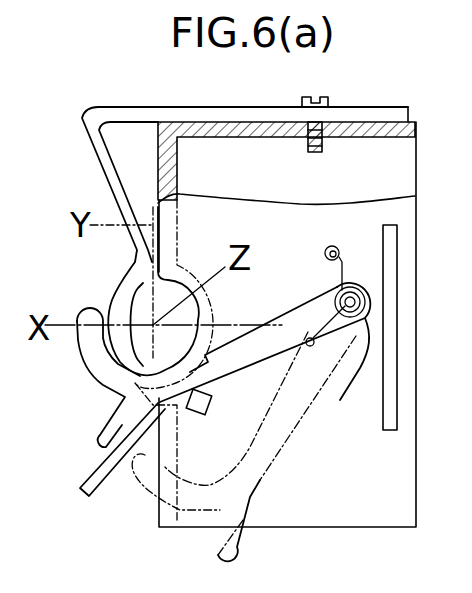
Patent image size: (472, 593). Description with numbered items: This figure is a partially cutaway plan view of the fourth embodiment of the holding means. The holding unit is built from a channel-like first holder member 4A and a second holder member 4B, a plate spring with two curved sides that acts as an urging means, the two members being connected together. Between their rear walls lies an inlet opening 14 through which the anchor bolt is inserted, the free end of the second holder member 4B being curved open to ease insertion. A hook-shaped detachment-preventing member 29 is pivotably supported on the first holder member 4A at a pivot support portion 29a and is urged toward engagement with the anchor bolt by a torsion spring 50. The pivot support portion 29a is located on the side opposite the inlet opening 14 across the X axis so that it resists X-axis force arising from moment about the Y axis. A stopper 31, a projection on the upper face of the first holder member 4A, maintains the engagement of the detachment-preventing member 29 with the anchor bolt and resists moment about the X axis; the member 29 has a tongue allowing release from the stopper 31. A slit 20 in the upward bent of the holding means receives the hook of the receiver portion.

The first holder member 4A is at (157, 166).
The second holder member 4B is at (86, 468).
The inlet opening 14 is at (122, 492).
The slit 20 is at (388, 238).
The detachment-preventing member 29 is at (100, 357).
The pivot support portion 29a is at (265, 422).
The stopper 31 is at (203, 413).
The torsion spring 50 is at (343, 264).